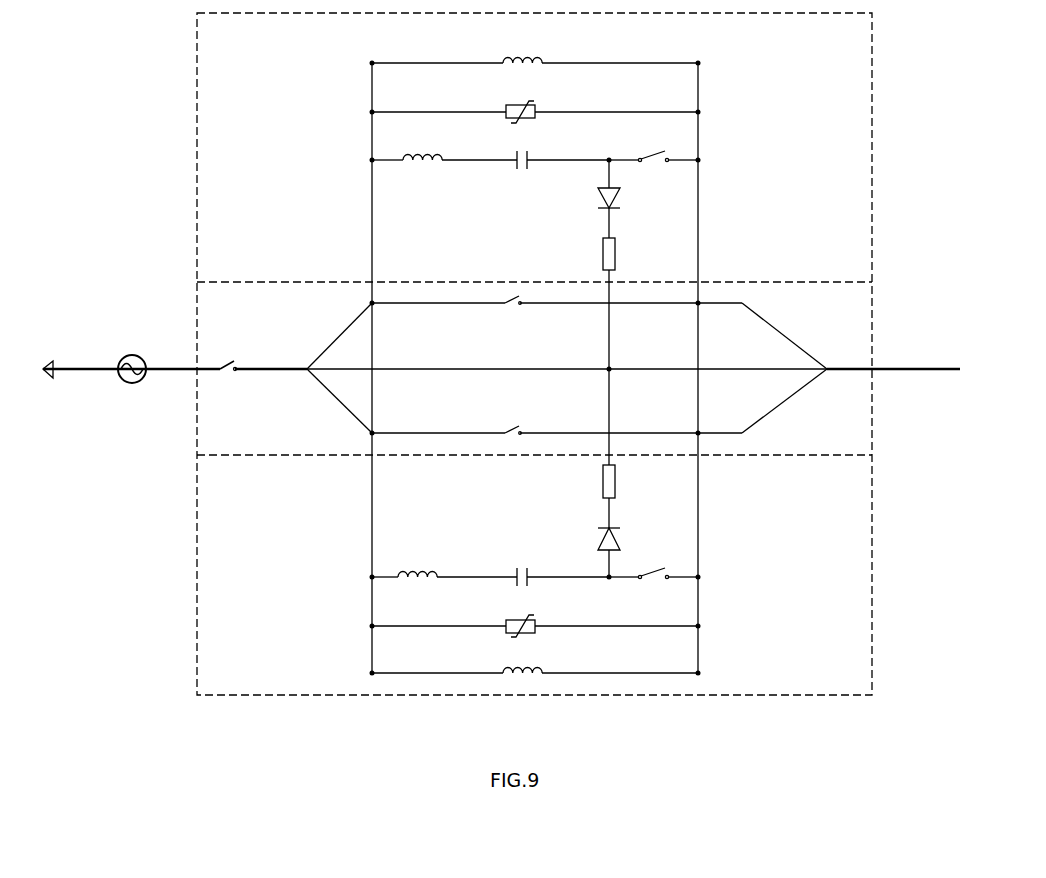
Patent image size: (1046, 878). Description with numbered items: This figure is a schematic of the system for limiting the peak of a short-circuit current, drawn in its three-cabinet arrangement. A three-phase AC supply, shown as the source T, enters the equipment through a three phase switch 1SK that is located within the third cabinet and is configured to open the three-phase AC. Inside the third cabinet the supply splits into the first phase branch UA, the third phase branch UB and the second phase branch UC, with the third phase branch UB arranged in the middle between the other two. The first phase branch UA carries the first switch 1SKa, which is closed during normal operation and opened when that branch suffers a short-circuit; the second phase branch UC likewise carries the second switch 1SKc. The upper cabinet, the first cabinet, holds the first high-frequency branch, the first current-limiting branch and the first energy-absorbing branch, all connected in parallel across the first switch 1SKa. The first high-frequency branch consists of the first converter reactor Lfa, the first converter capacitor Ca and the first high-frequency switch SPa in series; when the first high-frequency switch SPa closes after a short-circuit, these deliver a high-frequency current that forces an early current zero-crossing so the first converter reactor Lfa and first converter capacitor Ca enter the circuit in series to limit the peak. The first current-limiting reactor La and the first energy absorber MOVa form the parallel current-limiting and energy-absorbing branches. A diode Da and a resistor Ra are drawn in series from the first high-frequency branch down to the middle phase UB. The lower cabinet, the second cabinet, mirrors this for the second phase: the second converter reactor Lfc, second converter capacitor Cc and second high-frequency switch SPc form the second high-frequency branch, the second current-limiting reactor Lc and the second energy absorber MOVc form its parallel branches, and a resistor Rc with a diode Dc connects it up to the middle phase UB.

The power source / transformer T is at (132, 382).
The main isolating switch 1SK is at (230, 386).
The first current-limiting reactor La is at (535, 48).
The first energy absorber MOVa is at (535, 99).
The first converter reactor Lfa is at (444, 176).
The first converter capacitor Ca is at (560, 173).
The first high-frequency switch SPa is at (653, 170).
The phase A diode Da is at (626, 199).
The phase A resistor Ra is at (626, 254).
The phase A bus UA is at (557, 314).
The first switch 1SKa is at (526, 311).
The phase B bus UB is at (567, 358).
The phase C bus UC is at (557, 423).
The second switch 1SKc is at (526, 417).
The phase C resistor Rc is at (626, 481).
The phase C diode Dc is at (625, 541).
The second converter reactor Lfc is at (444, 556).
The second converter capacitor Cc is at (557, 561).
The second high-frequency switch SPc is at (653, 588).
The second energy absorber MOVc is at (535, 612).
The second current-limiting reactor Lc is at (535, 657).